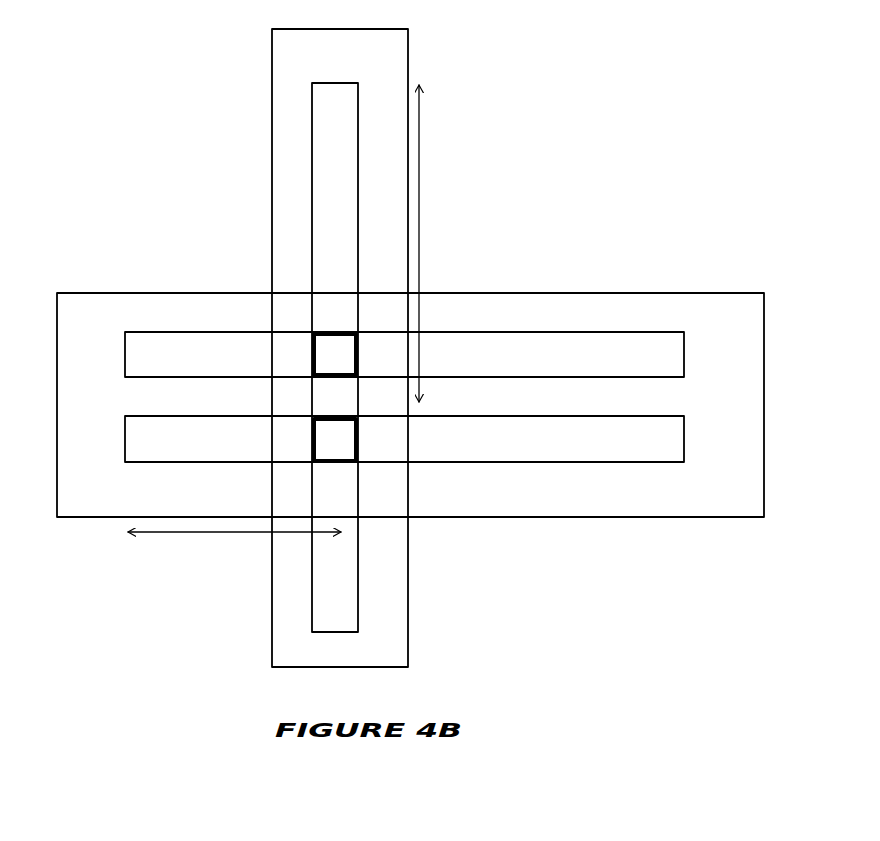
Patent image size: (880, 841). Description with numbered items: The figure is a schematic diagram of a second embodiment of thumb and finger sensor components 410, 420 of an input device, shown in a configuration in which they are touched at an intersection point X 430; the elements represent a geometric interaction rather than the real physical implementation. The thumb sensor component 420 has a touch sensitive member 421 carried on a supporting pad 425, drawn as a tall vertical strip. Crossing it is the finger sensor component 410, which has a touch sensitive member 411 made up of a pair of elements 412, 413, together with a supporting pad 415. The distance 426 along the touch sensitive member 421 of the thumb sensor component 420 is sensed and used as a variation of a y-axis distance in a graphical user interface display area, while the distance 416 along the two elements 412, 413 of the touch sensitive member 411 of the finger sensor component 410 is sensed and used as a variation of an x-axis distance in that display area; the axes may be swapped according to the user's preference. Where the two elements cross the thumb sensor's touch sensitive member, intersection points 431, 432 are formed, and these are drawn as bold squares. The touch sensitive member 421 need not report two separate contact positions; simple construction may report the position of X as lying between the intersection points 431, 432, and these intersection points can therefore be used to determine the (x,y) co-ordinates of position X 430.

The finger sensor component 410 is at (701, 277).
The touch sensitive member 411 is at (683, 242).
The element A1 412 is at (533, 438).
The element A2 413 is at (632, 347).
The supporting pad 415 is at (494, 303).
The distance DA 416 is at (187, 533).
The thumb sensor component 420 is at (256, 70).
The touch sensitive member B1 421 is at (329, 110).
The supporting pad 425 is at (278, 187).
The distance DB 426 is at (421, 198).
The intersection point X 430 is at (315, 395).
The intersection point A2B1 431 is at (328, 355).
The intersection point A1B1 432 is at (340, 435).